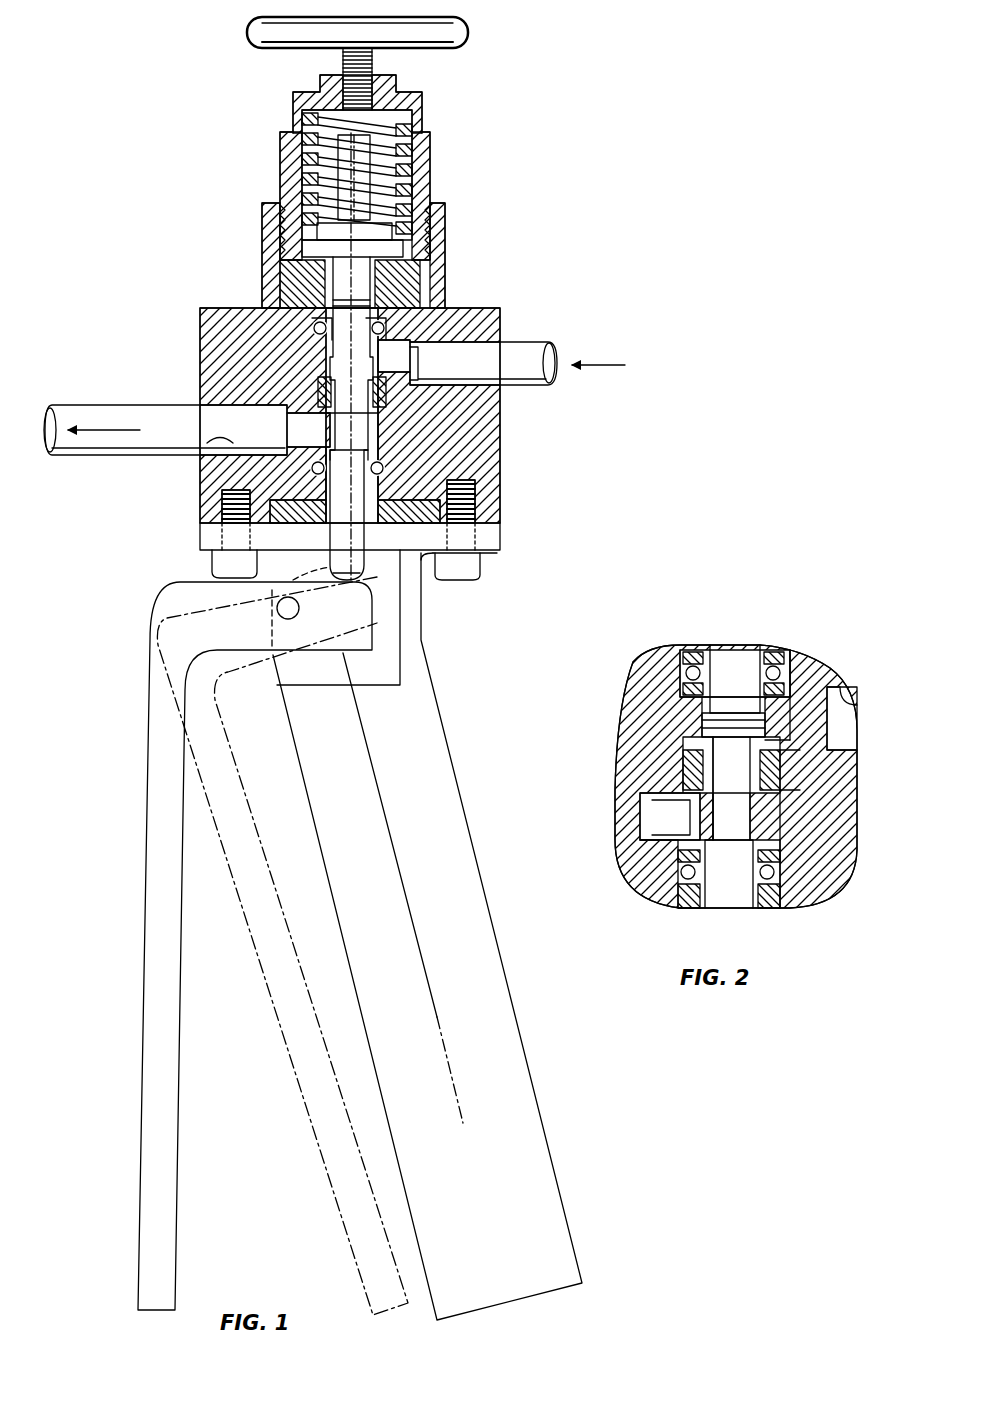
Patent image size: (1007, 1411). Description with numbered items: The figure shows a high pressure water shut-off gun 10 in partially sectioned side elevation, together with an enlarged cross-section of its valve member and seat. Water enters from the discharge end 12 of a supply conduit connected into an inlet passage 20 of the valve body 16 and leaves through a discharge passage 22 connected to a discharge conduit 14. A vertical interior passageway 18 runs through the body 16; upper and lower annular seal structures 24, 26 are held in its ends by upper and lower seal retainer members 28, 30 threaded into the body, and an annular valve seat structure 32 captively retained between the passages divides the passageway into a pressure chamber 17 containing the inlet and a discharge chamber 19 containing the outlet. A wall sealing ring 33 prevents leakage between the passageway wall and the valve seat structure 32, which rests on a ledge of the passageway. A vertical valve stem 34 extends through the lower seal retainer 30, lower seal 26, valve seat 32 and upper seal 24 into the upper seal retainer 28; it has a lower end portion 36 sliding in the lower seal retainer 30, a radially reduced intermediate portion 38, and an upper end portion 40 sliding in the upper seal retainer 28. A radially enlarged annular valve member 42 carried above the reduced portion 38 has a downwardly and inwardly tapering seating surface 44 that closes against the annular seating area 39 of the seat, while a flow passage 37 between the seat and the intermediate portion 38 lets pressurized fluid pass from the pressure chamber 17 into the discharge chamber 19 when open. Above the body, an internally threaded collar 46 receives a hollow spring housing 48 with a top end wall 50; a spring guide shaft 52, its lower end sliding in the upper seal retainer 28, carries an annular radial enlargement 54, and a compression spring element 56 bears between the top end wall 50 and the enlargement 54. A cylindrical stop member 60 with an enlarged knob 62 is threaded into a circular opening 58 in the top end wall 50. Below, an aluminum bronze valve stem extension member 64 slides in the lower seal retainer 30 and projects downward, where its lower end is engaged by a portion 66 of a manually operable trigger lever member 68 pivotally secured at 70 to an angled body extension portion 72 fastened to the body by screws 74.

In FIG. 1, the high pressure water shut-off gun 10 is at (518, 158).
In FIG. 1, the discharge end of high pressure water supply conduit 12 is at (560, 350).
In FIG. 1, the discharge conduit 14 is at (90, 405).
In FIG. 1, the valve body 16 is at (500, 478).
In FIG. 2, the valve body 16 is at (736, 776).
In FIG. 1, the pressure chamber 17 is at (332, 346).
In FIG. 2, the pressure chamber 17 is at (772, 700).
In FIG. 1, the interior passageway 18 is at (420, 425).
In FIG. 2, the interior passageway 18 is at (770, 847).
In FIG. 1, the discharge chamber 19 is at (440, 452).
In FIG. 2, the discharge chamber 19 is at (632, 882).
In FIG. 1, the inlet passage 20 is at (515, 342).
In FIG. 2, the inlet passage 20 is at (853, 700).
In FIG. 1, the discharge passage 22 is at (215, 447).
In FIG. 2, the discharge passage 22 is at (640, 833).
In FIG. 1, the upper annular seal structure 24 is at (263, 307).
In FIG. 2, the upper annular seal structure 24 is at (792, 652).
In FIG. 1, the lower annular seal structure 26 is at (236, 506).
In FIG. 2, the lower annular seal structure 26 is at (795, 880).
In FIG. 1, the upper annular seal retainer member 28 is at (422, 272).
In FIG. 1, the lower annular seal retainer member 30 is at (398, 550).
In FIG. 2, the lower annular seal retainer member 30 is at (775, 908).
In FIG. 1, the annular valve seat structure 32 is at (334, 418).
In FIG. 2, the annular valve seat structure 32 is at (765, 773).
In FIG. 2, the wall sealing ring 33 is at (790, 745).
In FIG. 1, the valve stem 34 is at (340, 364).
In FIG. 2, the valve stem 34 is at (747, 640).
In FIG. 1, the lower end portion of valve stem 36 is at (468, 500).
In FIG. 2, the lower end portion of valve stem 36 is at (729, 874).
In FIG. 2, the flow passage 37 is at (790, 808).
In FIG. 1, the radially reduced intermediate portion of valve stem 38 is at (343, 432).
In FIG. 2, the radially reduced intermediate portion of valve stem 38 is at (731, 788).
In FIG. 2, the annular seating area 39 is at (700, 812).
In FIG. 1, the upper end portion of valve stem 40 is at (386, 326).
In FIG. 2, the upper end portion of valve stem 40 is at (686, 705).
In FIG. 1, the valve member 42 is at (330, 398).
In FIG. 2, the valve member 42 is at (700, 727).
In FIG. 1, the seating surface 44 is at (388, 392).
In FIG. 2, the seating surface 44 is at (683, 768).
In FIG. 1, the internally threaded collar 46 is at (263, 232).
In FIG. 1, the spring housing 48 is at (432, 152).
In FIG. 1, the top end wall 50 is at (425, 95).
In FIG. 1, the spring guide shaft 52 is at (412, 135).
In FIG. 1, the annular radial enlargement 54 is at (404, 248).
In FIG. 1, the compression spring element 56 is at (304, 156).
In FIG. 1, the circular opening 58 is at (372, 108).
In FIG. 1, the stop member 60 is at (341, 58).
In FIG. 1, the knob 62 is at (249, 28).
In FIG. 1, the valve stem extension member 64 is at (330, 553).
In FIG. 1, the portion of trigger lever member 66 is at (365, 615).
In FIG. 1, the trigger lever member 68 is at (148, 934).
In FIG. 1, the pivot 70 is at (299, 608).
In FIG. 1, the angled body extension portion 72 is at (507, 983).
In FIG. 1, the screws 74 is at (212, 563).